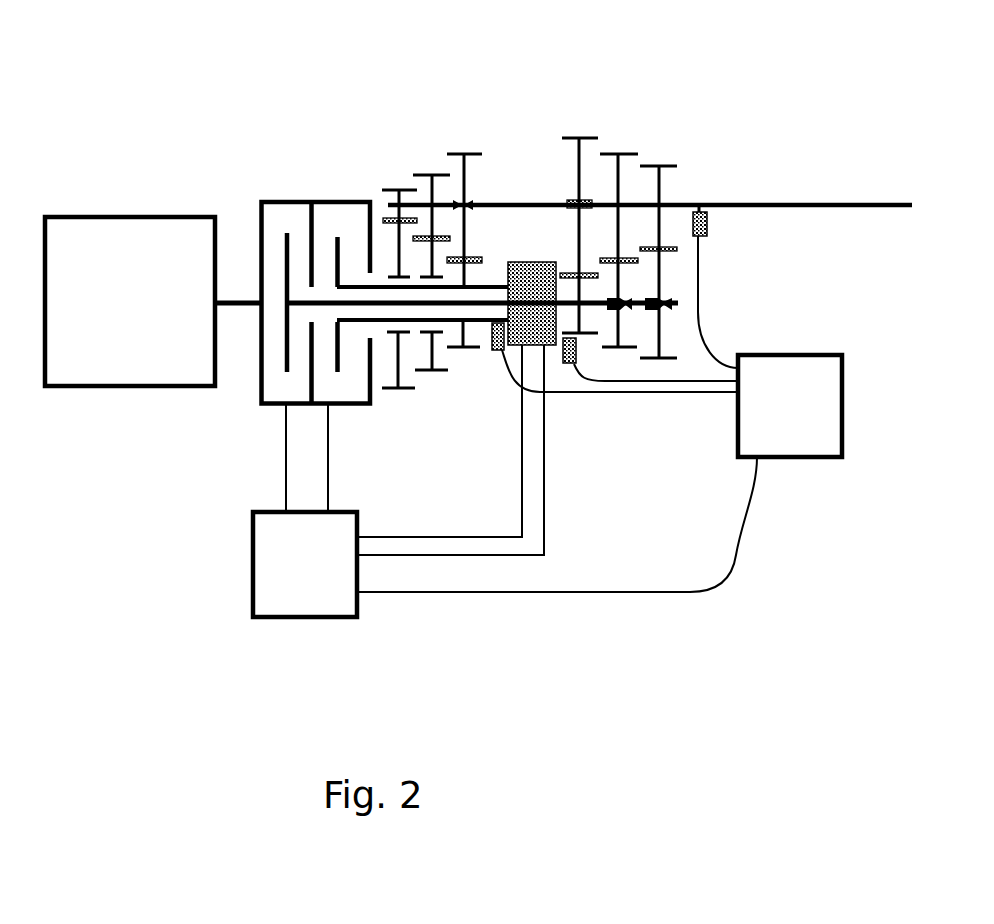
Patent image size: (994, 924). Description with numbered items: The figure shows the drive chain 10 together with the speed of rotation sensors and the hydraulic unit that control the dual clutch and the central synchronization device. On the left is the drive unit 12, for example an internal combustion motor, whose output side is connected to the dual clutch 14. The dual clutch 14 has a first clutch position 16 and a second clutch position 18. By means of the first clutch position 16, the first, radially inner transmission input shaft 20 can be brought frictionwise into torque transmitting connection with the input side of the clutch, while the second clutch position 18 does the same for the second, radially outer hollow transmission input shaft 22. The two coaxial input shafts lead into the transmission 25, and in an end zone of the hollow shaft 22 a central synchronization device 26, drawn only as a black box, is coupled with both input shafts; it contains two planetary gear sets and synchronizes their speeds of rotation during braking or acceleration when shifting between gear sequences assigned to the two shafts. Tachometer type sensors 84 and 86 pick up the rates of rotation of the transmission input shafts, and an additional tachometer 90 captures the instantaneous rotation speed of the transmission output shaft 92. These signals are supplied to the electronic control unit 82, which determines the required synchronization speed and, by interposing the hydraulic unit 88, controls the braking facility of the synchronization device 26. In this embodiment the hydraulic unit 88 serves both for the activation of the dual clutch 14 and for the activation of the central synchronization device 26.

The drive chain 10 is at (782, 137).
The drive unit 12 is at (148, 360).
The dual clutch 14 is at (240, 407).
The first clutch position 16 is at (282, 212).
The second clutch position 18 is at (333, 212).
The first transmission input shaft 20 is at (357, 308).
The second transmission input shaft 22 is at (417, 323).
The transmission 25 is at (660, 112).
The synchronization device 26 is at (522, 262).
The electronic control unit 82 is at (822, 442).
The sensor 84 is at (496, 351).
The sensor 86 is at (568, 364).
The hydraulic unit 88 is at (293, 592).
The tachometer 90 is at (706, 237).
The transmission output shaft 92 is at (868, 210).